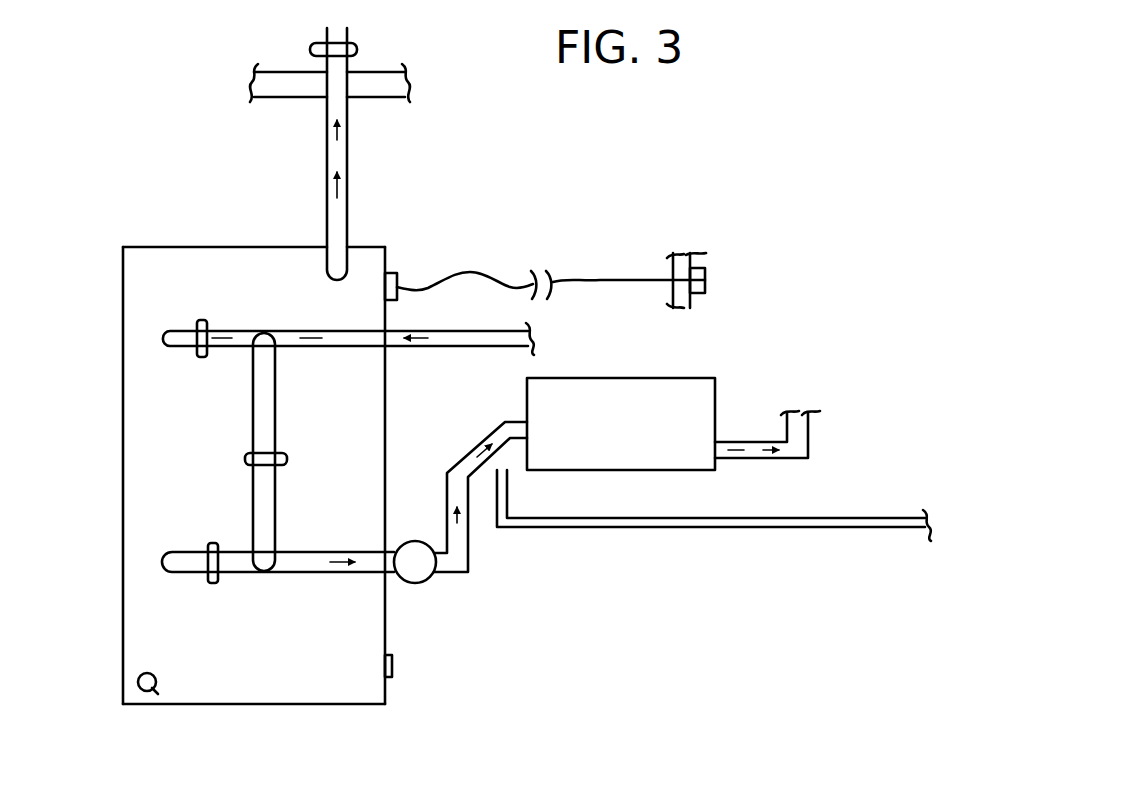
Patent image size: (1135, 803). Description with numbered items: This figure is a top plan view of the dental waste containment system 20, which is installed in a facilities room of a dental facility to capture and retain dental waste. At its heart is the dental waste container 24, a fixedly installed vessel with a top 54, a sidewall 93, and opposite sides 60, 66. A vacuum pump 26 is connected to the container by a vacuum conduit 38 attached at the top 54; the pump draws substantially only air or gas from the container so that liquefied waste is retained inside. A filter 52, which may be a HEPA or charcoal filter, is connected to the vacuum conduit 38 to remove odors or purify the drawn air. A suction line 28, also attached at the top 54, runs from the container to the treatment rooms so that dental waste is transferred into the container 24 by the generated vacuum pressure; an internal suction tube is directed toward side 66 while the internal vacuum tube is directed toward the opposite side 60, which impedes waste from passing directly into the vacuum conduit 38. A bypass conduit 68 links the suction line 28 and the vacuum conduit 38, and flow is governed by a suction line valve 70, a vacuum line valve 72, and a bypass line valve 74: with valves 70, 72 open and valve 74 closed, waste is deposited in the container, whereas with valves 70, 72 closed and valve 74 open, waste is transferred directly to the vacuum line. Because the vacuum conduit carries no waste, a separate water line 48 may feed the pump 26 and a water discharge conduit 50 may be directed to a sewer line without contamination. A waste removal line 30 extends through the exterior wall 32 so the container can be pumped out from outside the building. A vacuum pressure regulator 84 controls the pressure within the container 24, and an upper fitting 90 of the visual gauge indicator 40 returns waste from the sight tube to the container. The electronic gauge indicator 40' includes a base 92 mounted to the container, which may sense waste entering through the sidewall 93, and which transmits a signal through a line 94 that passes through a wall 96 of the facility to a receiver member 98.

The dental waste containment system 20 is at (145, 182).
The dental waste container 24 is at (118, 333).
The vacuum pump 26 is at (655, 390).
The suction line 28 is at (440, 346).
The waste removal line 30 is at (347, 157).
The exterior wall 32 is at (378, 82).
The vacuum conduit 38 is at (470, 548).
The indicator 40 is at (430, 694).
The indicator 40' is at (474, 258).
The water line 48 is at (675, 528).
The water discharge conduit 50 is at (808, 445).
The filter 52 is at (420, 580).
The top 54 is at (158, 504).
The side 60 is at (247, 704).
The side 66 is at (252, 247).
The bypass conduit 68 is at (270, 420).
The suction line valve 70 is at (204, 320).
The vacuum line valve 72 is at (215, 583).
The bypass line valve 74 is at (245, 457).
The vacuum pressure regulator 84 is at (152, 692).
The upper fitting 90 is at (393, 664).
The base 92 is at (397, 273).
The sidewall 93 is at (389, 460).
The line 94 is at (600, 279).
The wall 96 is at (685, 258).
The receiver member 98 is at (705, 285).